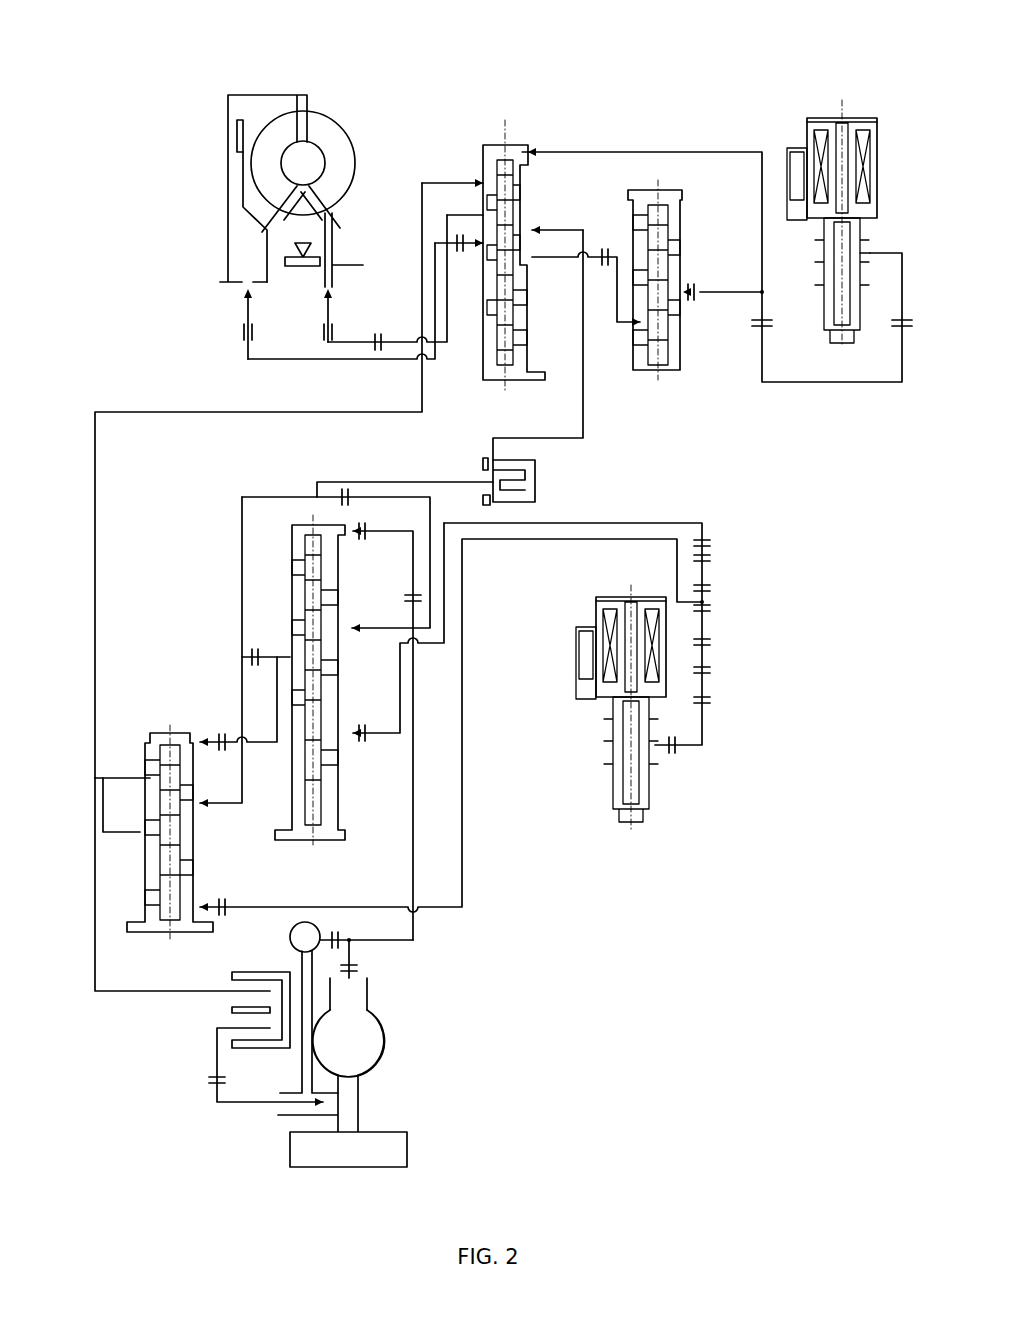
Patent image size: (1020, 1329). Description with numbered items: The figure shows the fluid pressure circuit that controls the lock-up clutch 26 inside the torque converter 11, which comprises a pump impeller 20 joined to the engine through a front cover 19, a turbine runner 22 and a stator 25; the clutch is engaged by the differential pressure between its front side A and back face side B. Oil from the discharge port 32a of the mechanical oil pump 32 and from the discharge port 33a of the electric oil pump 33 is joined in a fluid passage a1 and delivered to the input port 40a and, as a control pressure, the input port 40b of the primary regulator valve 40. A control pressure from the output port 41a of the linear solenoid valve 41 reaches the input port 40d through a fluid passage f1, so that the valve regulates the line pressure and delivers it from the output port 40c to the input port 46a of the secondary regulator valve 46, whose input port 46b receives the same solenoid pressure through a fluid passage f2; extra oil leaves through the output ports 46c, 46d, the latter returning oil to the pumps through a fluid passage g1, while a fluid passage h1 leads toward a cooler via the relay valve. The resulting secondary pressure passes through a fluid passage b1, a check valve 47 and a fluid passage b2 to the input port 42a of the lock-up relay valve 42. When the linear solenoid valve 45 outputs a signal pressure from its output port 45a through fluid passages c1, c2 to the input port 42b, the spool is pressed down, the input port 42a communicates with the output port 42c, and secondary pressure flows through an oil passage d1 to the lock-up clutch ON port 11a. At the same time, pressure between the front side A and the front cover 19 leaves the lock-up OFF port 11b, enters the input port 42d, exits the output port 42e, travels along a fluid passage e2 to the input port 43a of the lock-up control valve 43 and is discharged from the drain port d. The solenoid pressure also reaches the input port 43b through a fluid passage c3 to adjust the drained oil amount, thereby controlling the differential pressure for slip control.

The torque converter 11 is at (267, 183).
The front cover 19 is at (228, 162).
The pump impeller 20 is at (338, 134).
The turbine runner 22 is at (276, 120).
The stator 25 is at (305, 210).
The lock-up clutch 26 is at (228, 132).
The front side of the clutch plate A is at (236, 185).
The back face side of the clutch plate B is at (252, 217).
The lock-up clutch ON port 11a is at (325, 293).
The lock-up OFF port 11b is at (250, 300).
The mechanical oil pump 32 is at (390, 1040).
The discharge port 32a is at (362, 978).
The electric oil pump 33 is at (288, 937).
The discharge port 33a is at (335, 940).
The primary regulator valve 40 is at (290, 582).
The input port 40a is at (340, 632).
The input port 40b is at (347, 536).
The output port 40c is at (290, 655).
The input port 40d is at (344, 740).
The linear solenoid valve 41 is at (622, 590).
The output port 41a is at (660, 750).
The lock-up relay valve 42 is at (507, 135).
The input port 42a is at (525, 230).
The input port 42b is at (530, 150).
The output port 42c is at (480, 216).
The input port 42d is at (481, 250).
The output port 42e is at (526, 260).
The lock-up control valve 43 is at (665, 186).
The input port 43a is at (636, 326).
The input port 43b is at (688, 285).
The linear solenoid valve 45 is at (850, 107).
The output port 45a is at (887, 222).
The secondary regulator valve 46 is at (163, 730).
The input port 46a is at (196, 810).
The input port 46b is at (200, 905).
The output port 46c is at (143, 832).
The output port 46d is at (145, 778).
The check valve 47 is at (540, 478).
The fluid passage a1 is at (334, 360).
The fluid passage b1 is at (418, 482).
The fluid passage b2 is at (584, 395).
The fluid passage c1 is at (810, 383).
The fluid passage c2 is at (724, 150).
The fluid passage c3 is at (737, 290).
The drain port d is at (645, 312).
The oil passage d1 is at (402, 340).
The fluid passage e2 is at (596, 255).
The fluid passage f1 is at (690, 522).
The fluid passage f2 is at (510, 540).
The fluid passage g1 is at (92, 910).
The fluid passage h1 is at (97, 565).